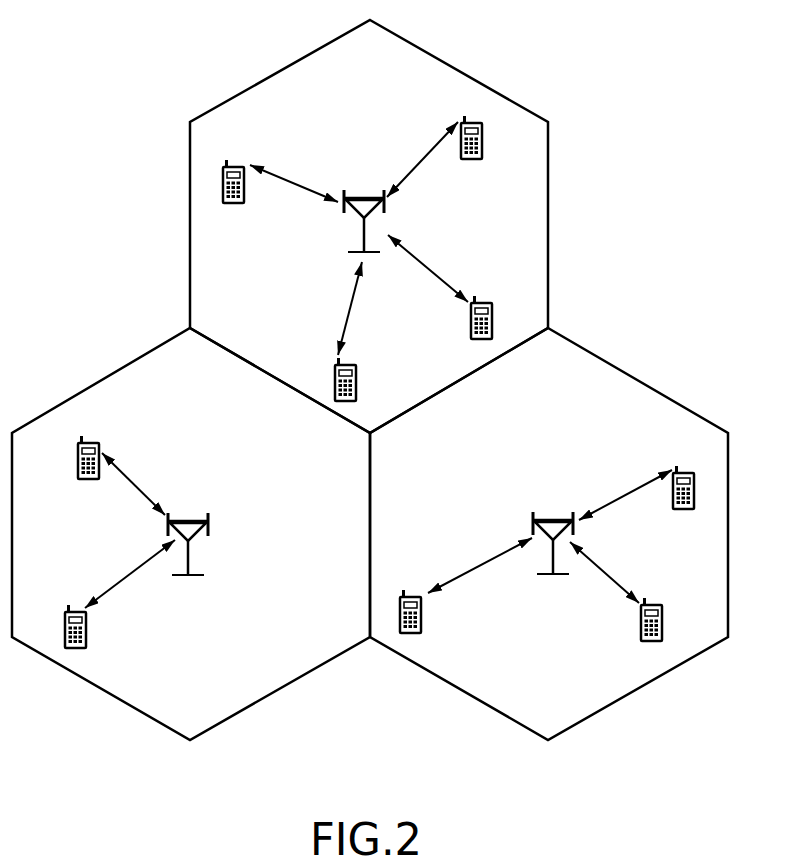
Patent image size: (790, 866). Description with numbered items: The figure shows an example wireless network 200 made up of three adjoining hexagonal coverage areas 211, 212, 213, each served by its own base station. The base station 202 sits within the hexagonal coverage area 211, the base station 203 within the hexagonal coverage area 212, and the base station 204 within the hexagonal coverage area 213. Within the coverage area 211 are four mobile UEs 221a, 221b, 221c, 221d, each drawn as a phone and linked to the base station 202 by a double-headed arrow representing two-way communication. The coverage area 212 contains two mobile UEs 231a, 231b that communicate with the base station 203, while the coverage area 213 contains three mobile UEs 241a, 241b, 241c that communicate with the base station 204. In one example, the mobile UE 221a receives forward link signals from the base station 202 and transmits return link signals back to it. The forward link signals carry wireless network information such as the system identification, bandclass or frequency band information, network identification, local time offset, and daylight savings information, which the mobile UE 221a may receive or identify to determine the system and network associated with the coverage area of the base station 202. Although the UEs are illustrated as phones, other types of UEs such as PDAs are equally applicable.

The wireless network 200 is at (385, 380).
The hexagonal coverage area 211 is at (424, 47).
The hexagonal coverage area 212 is at (80, 380).
The hexagonal coverage area 213 is at (662, 375).
The base station 202 is at (363, 198).
The base station 203 is at (189, 521).
The base station 204 is at (552, 520).
The mobile UE 221a is at (238, 150).
The mobile UE 221b is at (464, 117).
The mobile UE 221c is at (338, 360).
The mobile UE 221d is at (475, 298).
The mobile UE 231a is at (95, 427).
The mobile UE 231b is at (70, 606).
The mobile UE 241a is at (404, 590).
The mobile UE 241b is at (679, 466).
The mobile UE 241c is at (647, 598).